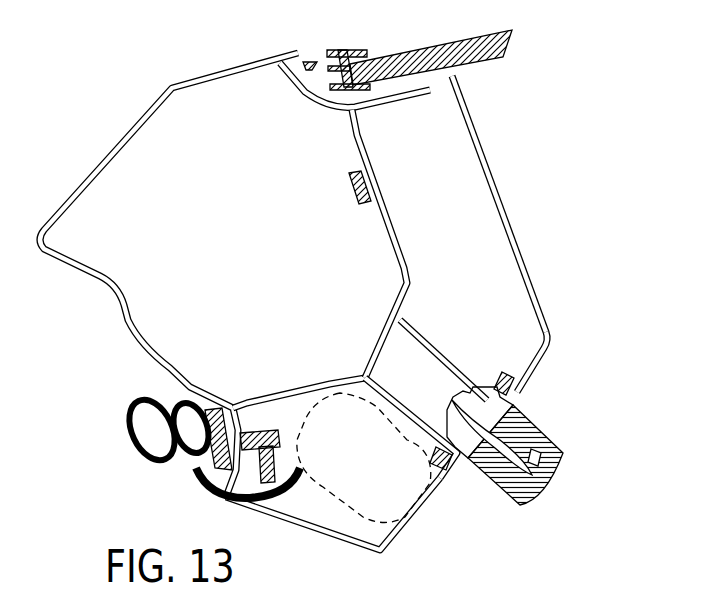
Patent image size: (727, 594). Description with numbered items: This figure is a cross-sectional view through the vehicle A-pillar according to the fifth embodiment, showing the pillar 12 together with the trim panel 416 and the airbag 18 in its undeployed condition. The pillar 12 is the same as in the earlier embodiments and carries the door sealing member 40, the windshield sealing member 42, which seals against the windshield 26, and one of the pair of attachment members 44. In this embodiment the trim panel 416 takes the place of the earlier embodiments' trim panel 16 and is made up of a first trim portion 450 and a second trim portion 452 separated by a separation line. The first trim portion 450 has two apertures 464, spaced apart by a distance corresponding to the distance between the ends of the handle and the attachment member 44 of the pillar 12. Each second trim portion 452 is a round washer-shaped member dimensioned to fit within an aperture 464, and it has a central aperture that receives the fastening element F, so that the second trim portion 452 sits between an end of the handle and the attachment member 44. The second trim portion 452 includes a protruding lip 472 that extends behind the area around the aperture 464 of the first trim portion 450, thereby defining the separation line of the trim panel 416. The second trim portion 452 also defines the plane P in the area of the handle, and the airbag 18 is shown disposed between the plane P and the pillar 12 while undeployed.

The pillar 12 is at (97, 138).
The panel strip 16 is at (522, 158).
The airbag 18 is at (333, 497).
The windshield 26 is at (407, 63).
The door sealing member 40 is at (143, 438).
The windshield sealing member 42 is at (345, 48).
The attachment member 44 is at (430, 345).
The trim panel 416 is at (622, 283).
The first trim portion 450 is at (558, 337).
The second trim portion 452 is at (520, 397).
The aperture 464 is at (447, 470).
The protruding lip 472 is at (503, 373).
The fastening element F is at (530, 463).
The plane P is at (360, 588).